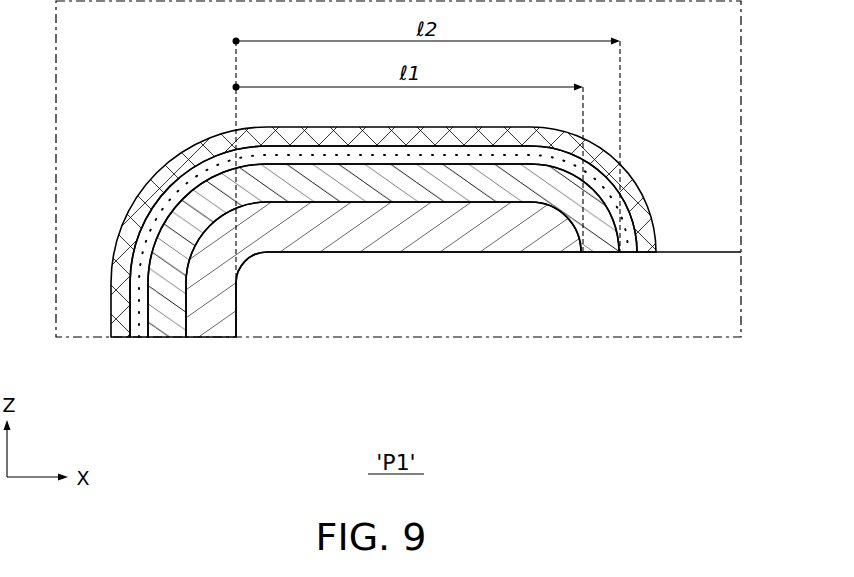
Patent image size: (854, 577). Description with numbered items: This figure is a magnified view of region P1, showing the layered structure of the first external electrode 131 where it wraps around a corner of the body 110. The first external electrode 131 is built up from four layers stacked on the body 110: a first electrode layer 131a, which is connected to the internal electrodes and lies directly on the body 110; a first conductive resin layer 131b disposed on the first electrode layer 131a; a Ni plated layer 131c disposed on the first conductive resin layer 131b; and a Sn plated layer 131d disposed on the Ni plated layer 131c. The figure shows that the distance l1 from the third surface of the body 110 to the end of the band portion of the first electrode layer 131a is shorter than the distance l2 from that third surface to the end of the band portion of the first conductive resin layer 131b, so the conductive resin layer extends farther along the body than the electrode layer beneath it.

The body 110 is at (686, 252).
The first external electrode 131 is at (354, 287).
The first electrode layer 131a is at (218, 340).
The first conductive resin layer 131b is at (167, 340).
The Ni plated layer 131c is at (142, 340).
The Sn plated layer 131d is at (279, 404).